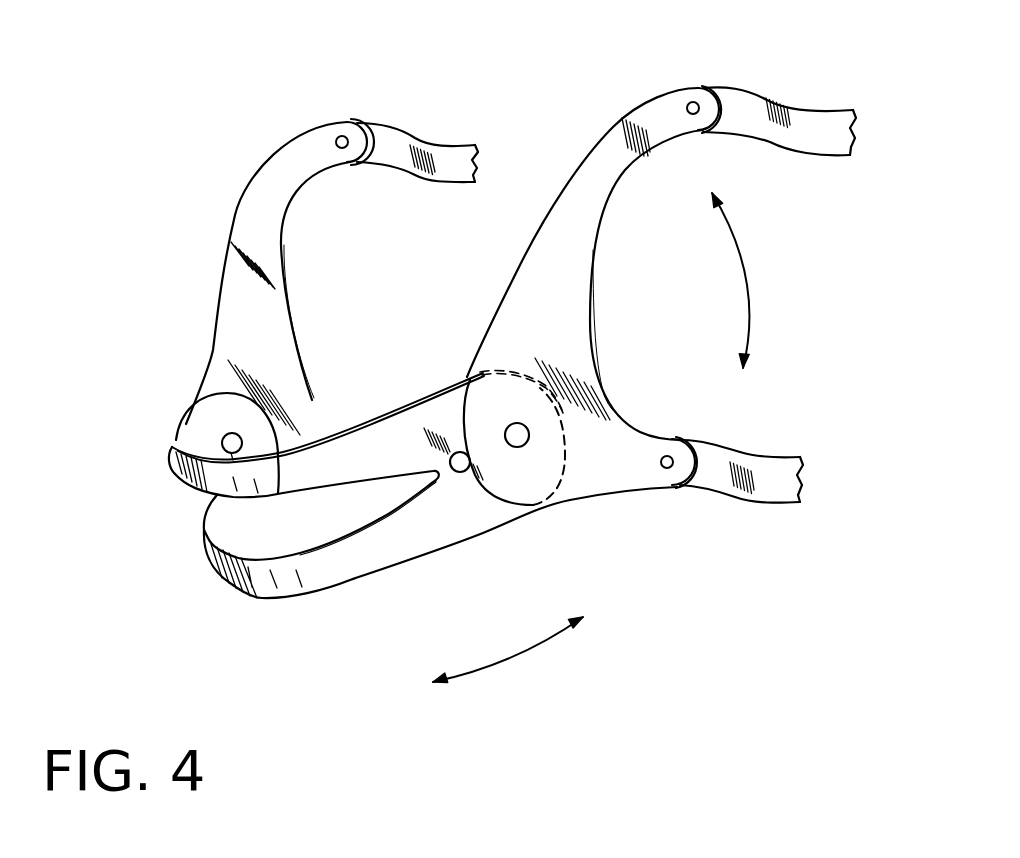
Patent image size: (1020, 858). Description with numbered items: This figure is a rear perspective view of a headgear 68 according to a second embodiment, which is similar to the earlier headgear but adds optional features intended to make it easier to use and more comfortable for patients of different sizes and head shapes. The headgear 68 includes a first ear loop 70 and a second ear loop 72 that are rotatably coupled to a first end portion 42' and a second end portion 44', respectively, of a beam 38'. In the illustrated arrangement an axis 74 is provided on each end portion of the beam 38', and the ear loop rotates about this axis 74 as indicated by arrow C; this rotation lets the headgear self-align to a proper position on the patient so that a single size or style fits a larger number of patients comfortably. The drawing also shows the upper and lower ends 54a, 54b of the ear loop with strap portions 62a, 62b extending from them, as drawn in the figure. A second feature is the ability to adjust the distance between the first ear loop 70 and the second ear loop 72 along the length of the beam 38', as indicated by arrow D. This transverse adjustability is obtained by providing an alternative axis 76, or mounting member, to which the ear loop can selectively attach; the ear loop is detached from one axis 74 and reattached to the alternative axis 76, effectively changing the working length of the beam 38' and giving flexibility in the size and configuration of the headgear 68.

The headgear 68 is at (212, 157).
The second ear loop 72 is at (247, 287).
The first ear loop 70 is at (510, 332).
The upper pivot ear 54a is at (658, 102).
The lower pivot ear 54b is at (640, 467).
The upper strap 62a is at (787, 110).
The lower strap 62b is at (753, 463).
The second end portion 44' is at (172, 433).
The first end portion 42' is at (328, 387).
The beam 38' is at (373, 575).
The axis 74 is at (529, 441).
The alternative axis 76 is at (466, 470).
The arrow C is at (747, 281).
The arrow D is at (510, 657).